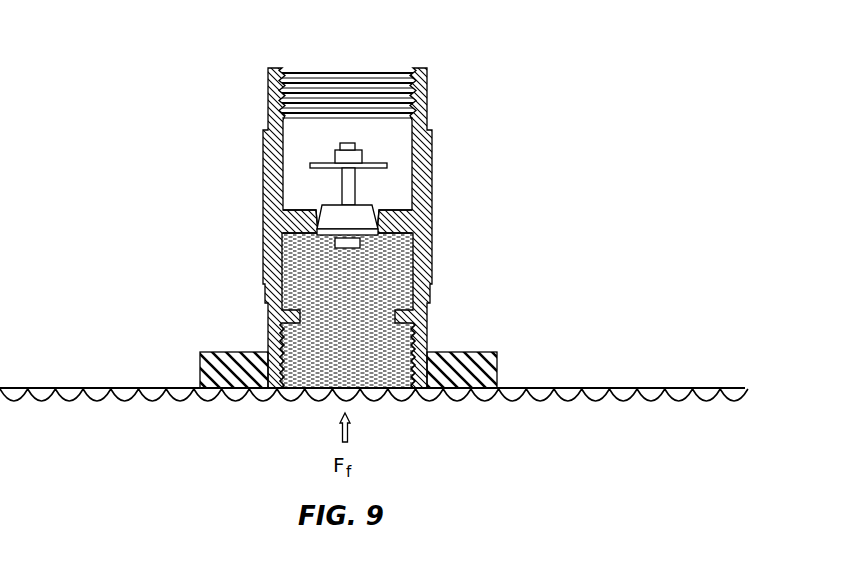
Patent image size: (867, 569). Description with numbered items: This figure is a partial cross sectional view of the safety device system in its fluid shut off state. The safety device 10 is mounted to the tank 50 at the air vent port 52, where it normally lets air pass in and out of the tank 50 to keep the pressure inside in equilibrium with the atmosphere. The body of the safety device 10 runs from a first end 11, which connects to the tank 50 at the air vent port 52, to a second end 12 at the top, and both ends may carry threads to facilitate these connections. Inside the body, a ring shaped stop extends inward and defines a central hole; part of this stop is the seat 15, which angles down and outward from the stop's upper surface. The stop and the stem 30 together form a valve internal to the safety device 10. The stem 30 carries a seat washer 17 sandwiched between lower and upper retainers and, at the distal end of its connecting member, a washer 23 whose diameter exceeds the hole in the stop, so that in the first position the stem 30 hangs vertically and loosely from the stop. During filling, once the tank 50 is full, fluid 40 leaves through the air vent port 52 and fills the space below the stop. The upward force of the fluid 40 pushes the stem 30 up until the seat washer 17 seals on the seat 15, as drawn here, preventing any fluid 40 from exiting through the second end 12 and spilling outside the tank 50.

The safety device 10 is at (374, 214).
The first end 11 is at (430, 352).
The second end 12 is at (422, 68).
The seat 15 is at (320, 231).
The seat washer 17 is at (402, 232).
The washer 23 is at (375, 164).
The stem 30 is at (305, 183).
The fluid 40 is at (390, 298).
The tank 50 is at (131, 387).
The air vent port 52 is at (463, 352).